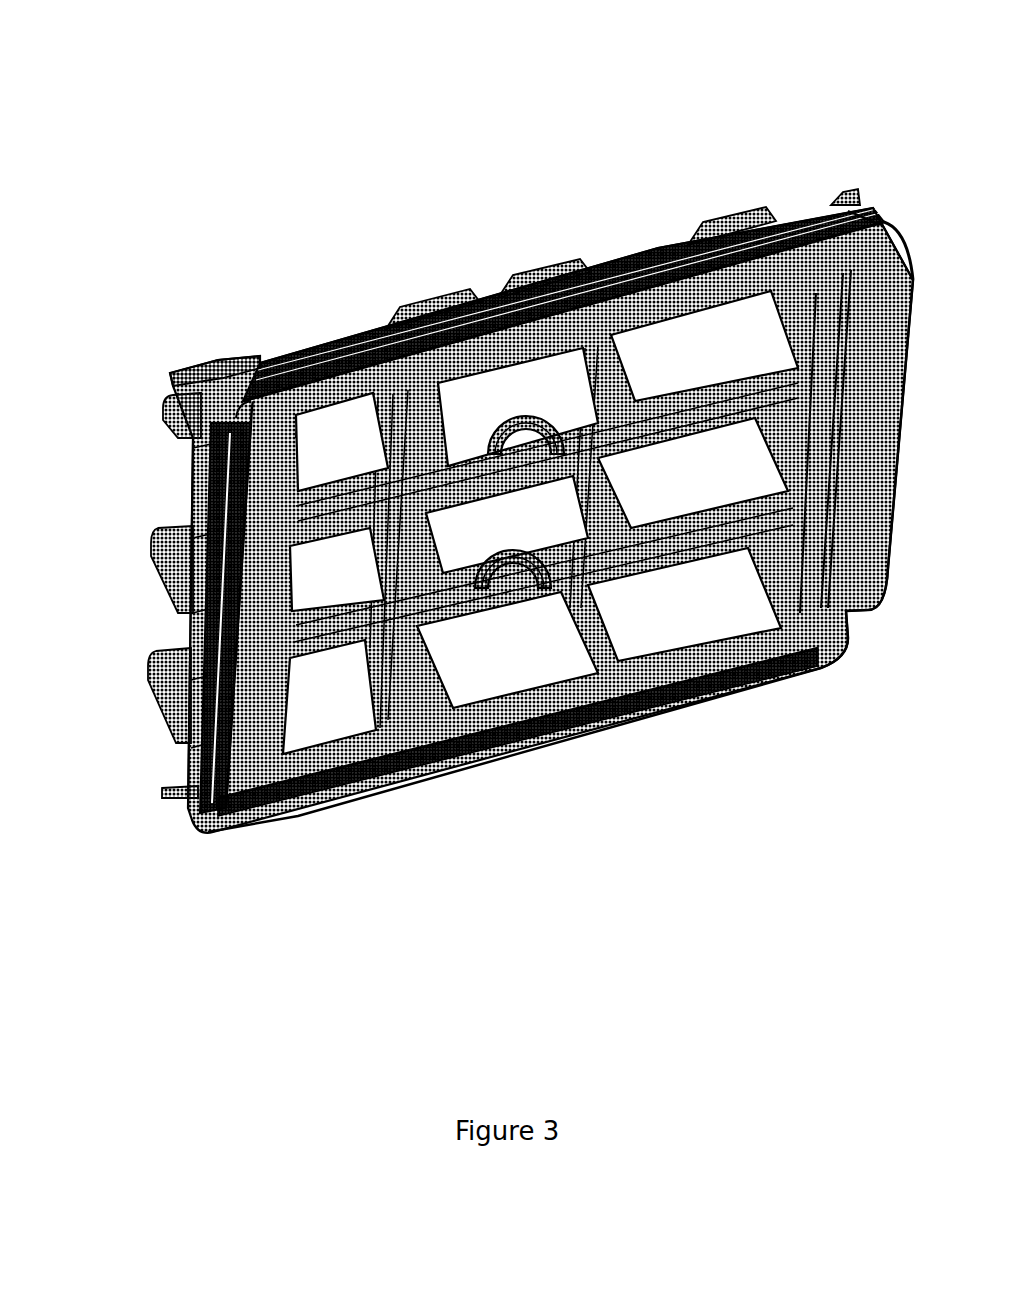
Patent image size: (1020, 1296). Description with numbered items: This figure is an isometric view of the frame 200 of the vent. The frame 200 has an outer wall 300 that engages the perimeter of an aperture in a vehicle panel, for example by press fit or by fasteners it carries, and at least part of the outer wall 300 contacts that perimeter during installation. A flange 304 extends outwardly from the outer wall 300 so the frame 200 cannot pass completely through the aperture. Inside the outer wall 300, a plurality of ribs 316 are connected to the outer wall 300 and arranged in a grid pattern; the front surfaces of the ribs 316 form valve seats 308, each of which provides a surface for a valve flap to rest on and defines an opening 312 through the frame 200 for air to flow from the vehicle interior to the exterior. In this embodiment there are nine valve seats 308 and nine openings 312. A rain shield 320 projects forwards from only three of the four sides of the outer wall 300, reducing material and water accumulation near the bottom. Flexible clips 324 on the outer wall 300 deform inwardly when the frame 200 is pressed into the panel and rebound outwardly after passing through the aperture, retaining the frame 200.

The frame 200 is at (210, 112).
The outer wall 300 is at (188, 468).
The flange 304 is at (172, 800).
The valve seat 308 is at (633, 658).
The opening 312 is at (684, 604).
The ribs 316 is at (537, 735).
The rain shield 320 is at (688, 292).
The flexible clips 324 is at (222, 345).